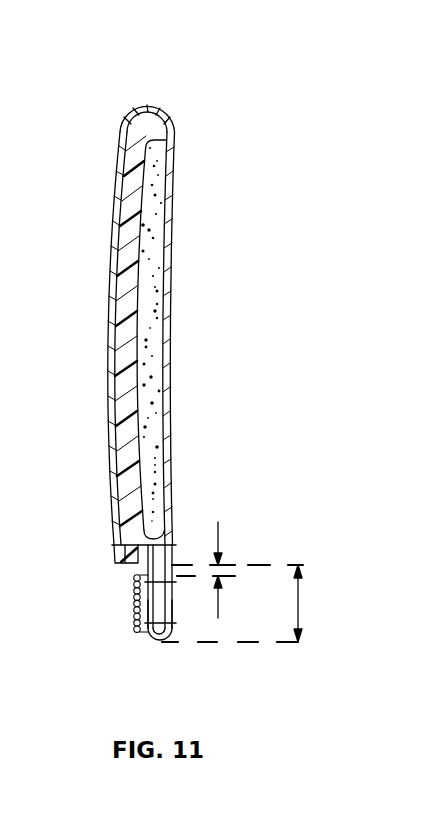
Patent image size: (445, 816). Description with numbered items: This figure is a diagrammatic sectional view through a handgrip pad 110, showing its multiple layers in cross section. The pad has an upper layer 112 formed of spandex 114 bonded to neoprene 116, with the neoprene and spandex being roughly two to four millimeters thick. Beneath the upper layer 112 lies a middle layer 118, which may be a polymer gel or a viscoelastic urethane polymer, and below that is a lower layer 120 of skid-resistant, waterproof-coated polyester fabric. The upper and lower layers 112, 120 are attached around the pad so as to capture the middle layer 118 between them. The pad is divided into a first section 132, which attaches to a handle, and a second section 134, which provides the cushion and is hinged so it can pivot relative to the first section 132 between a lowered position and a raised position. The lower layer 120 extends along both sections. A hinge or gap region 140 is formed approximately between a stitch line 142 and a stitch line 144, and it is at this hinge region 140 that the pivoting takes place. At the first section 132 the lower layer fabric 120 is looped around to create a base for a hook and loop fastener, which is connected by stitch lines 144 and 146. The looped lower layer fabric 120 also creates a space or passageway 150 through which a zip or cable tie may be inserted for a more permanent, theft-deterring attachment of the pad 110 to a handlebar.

The handgrip pad 110 is at (180, 72).
The upper layer 112 is at (112, 161).
The spandex 114 is at (118, 210).
The neoprene 116 is at (128, 258).
The middle layer 118 is at (147, 408).
The lower layer 120 is at (172, 342).
The second section 134 is at (188, 230).
The stitch line 142 is at (175, 545).
The stitch line 144 is at (180, 580).
The stitch line 146 is at (150, 647).
The passageway 150 is at (158, 604).
The hinge or gap region 140 is at (222, 534).
The first section 132 is at (301, 601).